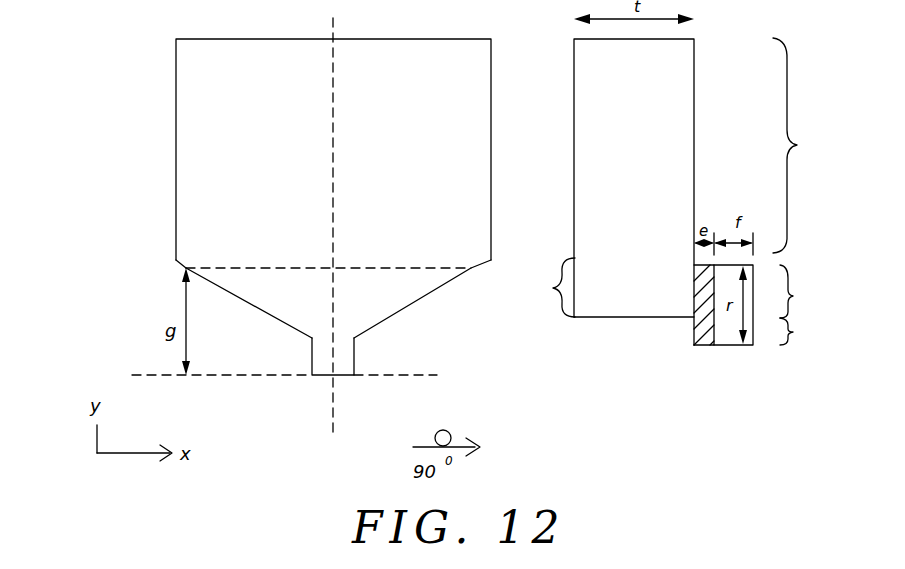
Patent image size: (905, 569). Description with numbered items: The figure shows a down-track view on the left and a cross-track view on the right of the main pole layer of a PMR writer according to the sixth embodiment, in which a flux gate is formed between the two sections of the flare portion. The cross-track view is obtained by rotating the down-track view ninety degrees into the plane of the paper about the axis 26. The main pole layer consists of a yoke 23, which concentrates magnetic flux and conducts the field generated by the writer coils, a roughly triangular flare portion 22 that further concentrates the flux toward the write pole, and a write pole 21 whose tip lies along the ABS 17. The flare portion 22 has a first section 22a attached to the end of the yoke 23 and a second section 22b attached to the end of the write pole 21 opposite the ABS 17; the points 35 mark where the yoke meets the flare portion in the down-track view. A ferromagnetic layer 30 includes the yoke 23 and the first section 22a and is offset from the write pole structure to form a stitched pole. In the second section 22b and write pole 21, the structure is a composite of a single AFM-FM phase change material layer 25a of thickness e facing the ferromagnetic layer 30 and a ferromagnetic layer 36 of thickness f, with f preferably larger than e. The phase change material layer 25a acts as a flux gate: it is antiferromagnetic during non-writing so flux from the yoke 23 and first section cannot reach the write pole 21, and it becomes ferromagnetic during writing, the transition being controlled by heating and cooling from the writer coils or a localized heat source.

The ABS 17 is at (286, 376).
The write pole 21 is at (322, 378).
The flare portion 22 is at (393, 300).
The first section 22a is at (543, 287).
The second section 22b is at (805, 291).
The yoke 23 is at (195, 88).
The AFM-FM phase change material layer 25a is at (705, 338).
The axis 26 is at (334, 235).
The ferromagnetic layer 30 is at (590, 68).
The corner transition 35 is at (184, 270).
The ferromagnetic layer 36 is at (727, 338).